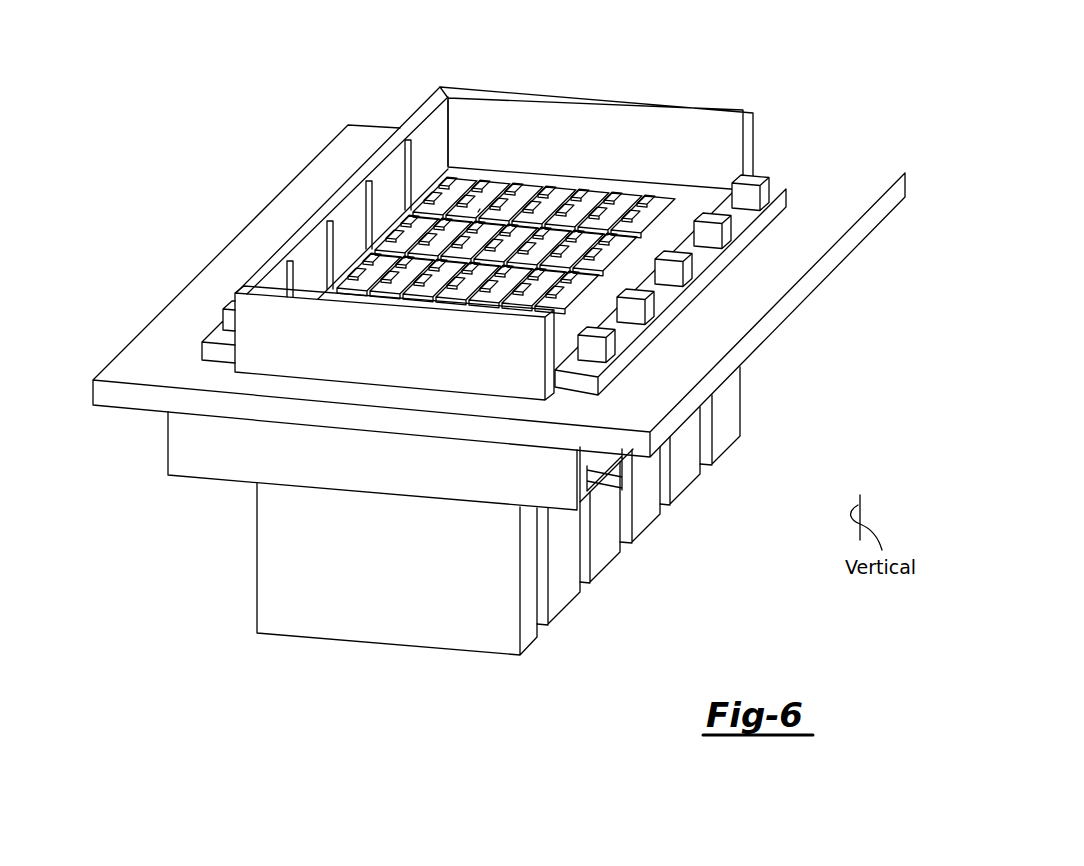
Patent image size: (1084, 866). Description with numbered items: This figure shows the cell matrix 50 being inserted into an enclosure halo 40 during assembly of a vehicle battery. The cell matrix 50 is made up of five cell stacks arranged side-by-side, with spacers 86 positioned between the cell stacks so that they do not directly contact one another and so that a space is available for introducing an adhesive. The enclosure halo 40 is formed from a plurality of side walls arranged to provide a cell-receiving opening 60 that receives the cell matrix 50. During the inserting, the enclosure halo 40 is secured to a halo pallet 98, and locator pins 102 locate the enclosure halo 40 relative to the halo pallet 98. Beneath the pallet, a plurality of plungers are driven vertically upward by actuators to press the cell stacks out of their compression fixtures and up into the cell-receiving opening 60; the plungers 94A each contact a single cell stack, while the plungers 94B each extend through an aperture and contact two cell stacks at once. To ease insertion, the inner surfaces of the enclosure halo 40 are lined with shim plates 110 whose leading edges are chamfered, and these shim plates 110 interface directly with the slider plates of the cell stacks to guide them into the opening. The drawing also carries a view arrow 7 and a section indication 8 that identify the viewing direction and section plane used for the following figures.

The shim plate 110 is at (426, 148).
The cell-receiving opening 60 is at (552, 124).
The spacer 86 is at (478, 212).
The cell matrix 50 is at (553, 183).
The enclosure halo 40 is at (732, 153).
The halo pallet 98 is at (832, 190).
The locator pin 102 is at (728, 228).
The plunger 94A is at (712, 475).
The plunger 94B is at (565, 562).
The view direction of FIG. 7 is at (388, 667).
The section line of FIG. 8 is at (228, 290).